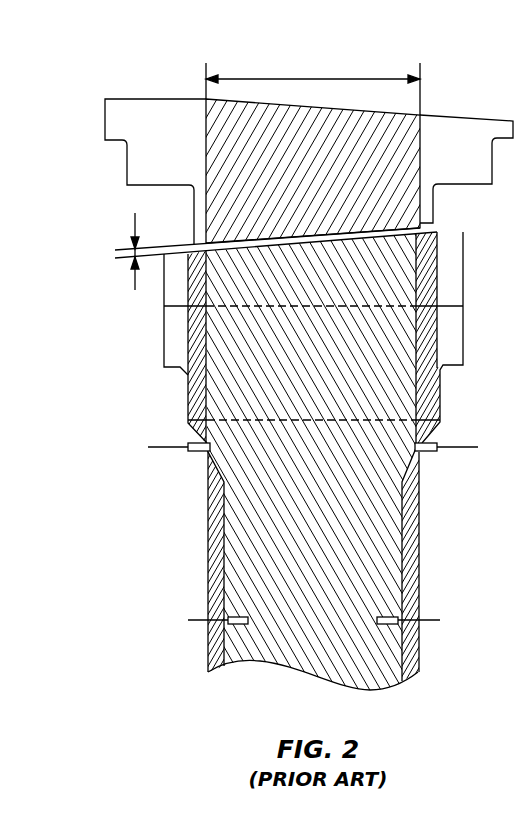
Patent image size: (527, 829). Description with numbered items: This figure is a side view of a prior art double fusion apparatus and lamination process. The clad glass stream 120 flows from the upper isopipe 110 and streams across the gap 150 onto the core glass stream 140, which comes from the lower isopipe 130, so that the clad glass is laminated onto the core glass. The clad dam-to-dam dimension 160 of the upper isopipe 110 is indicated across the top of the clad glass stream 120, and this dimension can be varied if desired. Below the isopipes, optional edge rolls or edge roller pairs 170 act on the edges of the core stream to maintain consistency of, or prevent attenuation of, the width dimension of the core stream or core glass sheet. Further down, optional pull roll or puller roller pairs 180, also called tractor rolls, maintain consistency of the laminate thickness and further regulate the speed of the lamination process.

The upper isopipe 110 is at (118, 118).
The clad glass stream 120 is at (390, 112).
The lower isopipe 130 is at (175, 328).
The core glass stream 140 is at (428, 264).
The gap 150 is at (128, 248).
The clad dam-to-dam dimension 160 is at (331, 79).
The edge roller pairs 170 is at (195, 455).
The pull roller pairs 180 is at (202, 624).